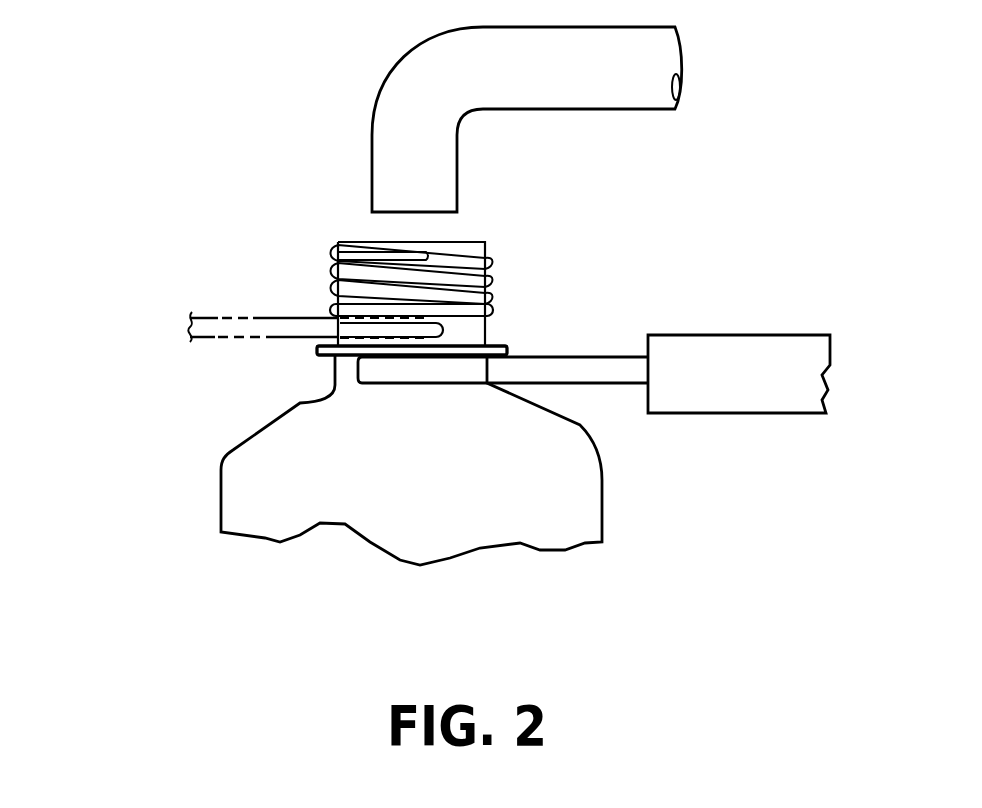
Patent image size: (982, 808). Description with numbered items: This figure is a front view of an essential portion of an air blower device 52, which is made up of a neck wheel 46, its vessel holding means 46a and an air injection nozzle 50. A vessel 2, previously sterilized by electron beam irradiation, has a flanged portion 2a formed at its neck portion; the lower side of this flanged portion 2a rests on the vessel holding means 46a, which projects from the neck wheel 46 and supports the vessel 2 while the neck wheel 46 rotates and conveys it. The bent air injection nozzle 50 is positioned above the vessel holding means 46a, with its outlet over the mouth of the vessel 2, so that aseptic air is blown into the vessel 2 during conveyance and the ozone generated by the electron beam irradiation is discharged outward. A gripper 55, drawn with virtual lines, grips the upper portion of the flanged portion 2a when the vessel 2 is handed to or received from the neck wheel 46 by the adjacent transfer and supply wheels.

The vessel 2 is at (214, 467).
The flanged portion 2a is at (317, 351).
The neck wheel 46 is at (718, 335).
The vessel holding means 46a is at (435, 370).
The air injection nozzle 50 is at (587, 85).
The air blower device 52 is at (785, 145).
The gripper 55 is at (267, 317).